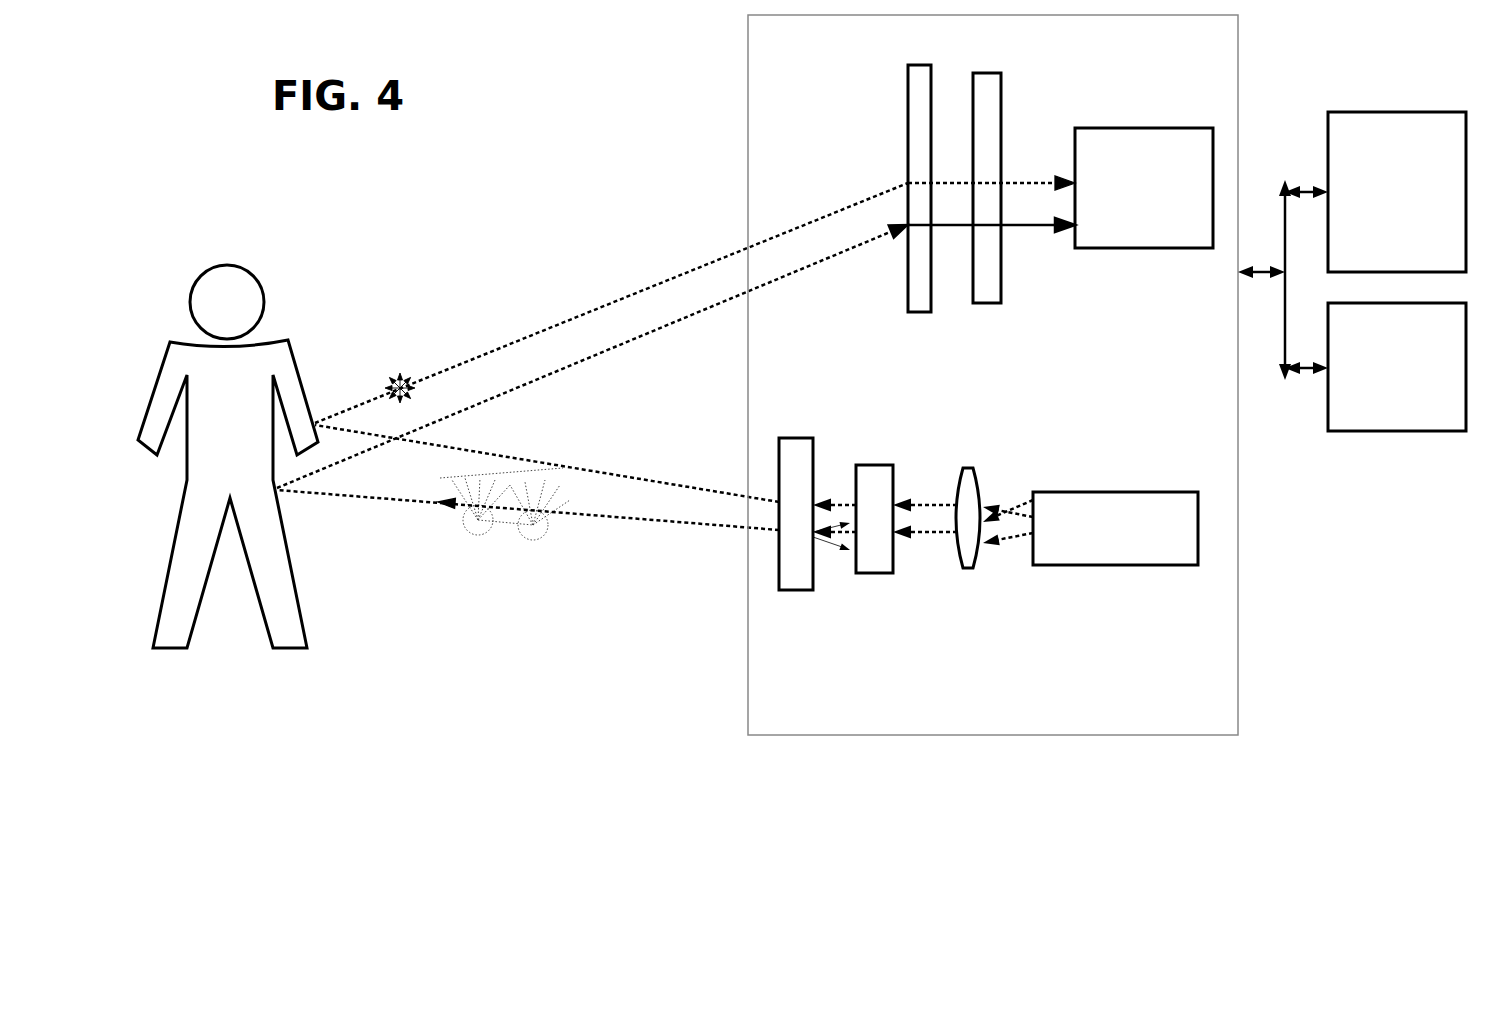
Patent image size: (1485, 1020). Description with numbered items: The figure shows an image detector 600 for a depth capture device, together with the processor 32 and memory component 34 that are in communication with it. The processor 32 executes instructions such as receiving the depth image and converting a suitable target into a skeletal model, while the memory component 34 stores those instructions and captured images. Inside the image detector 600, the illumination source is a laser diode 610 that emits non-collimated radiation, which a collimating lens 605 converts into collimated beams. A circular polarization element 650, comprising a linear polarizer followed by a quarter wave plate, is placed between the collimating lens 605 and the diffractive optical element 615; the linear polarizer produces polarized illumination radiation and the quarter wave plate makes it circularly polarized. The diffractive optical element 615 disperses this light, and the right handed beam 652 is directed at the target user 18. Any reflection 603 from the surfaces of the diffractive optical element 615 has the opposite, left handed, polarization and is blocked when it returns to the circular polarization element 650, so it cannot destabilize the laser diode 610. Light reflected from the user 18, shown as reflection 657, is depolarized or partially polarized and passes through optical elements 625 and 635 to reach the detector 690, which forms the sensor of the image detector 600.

The user 18 is at (267, 288).
The processor 32 is at (1397, 192).
The memory component 34 is at (1397, 367).
The image detector 600 is at (748, 147).
The reflection 603 is at (843, 550).
The collimating lens 605 is at (980, 487).
The laser diode 610 is at (1153, 497).
The diffractive optical element 615 is at (779, 438).
The optical element 625 is at (908, 93).
The optical element 635 is at (1002, 110).
The circular polarization element 650 is at (883, 465).
The polarized illumination radiation 652 is at (568, 467).
The reflection 657 is at (590, 312).
The detector 690 is at (1123, 128).